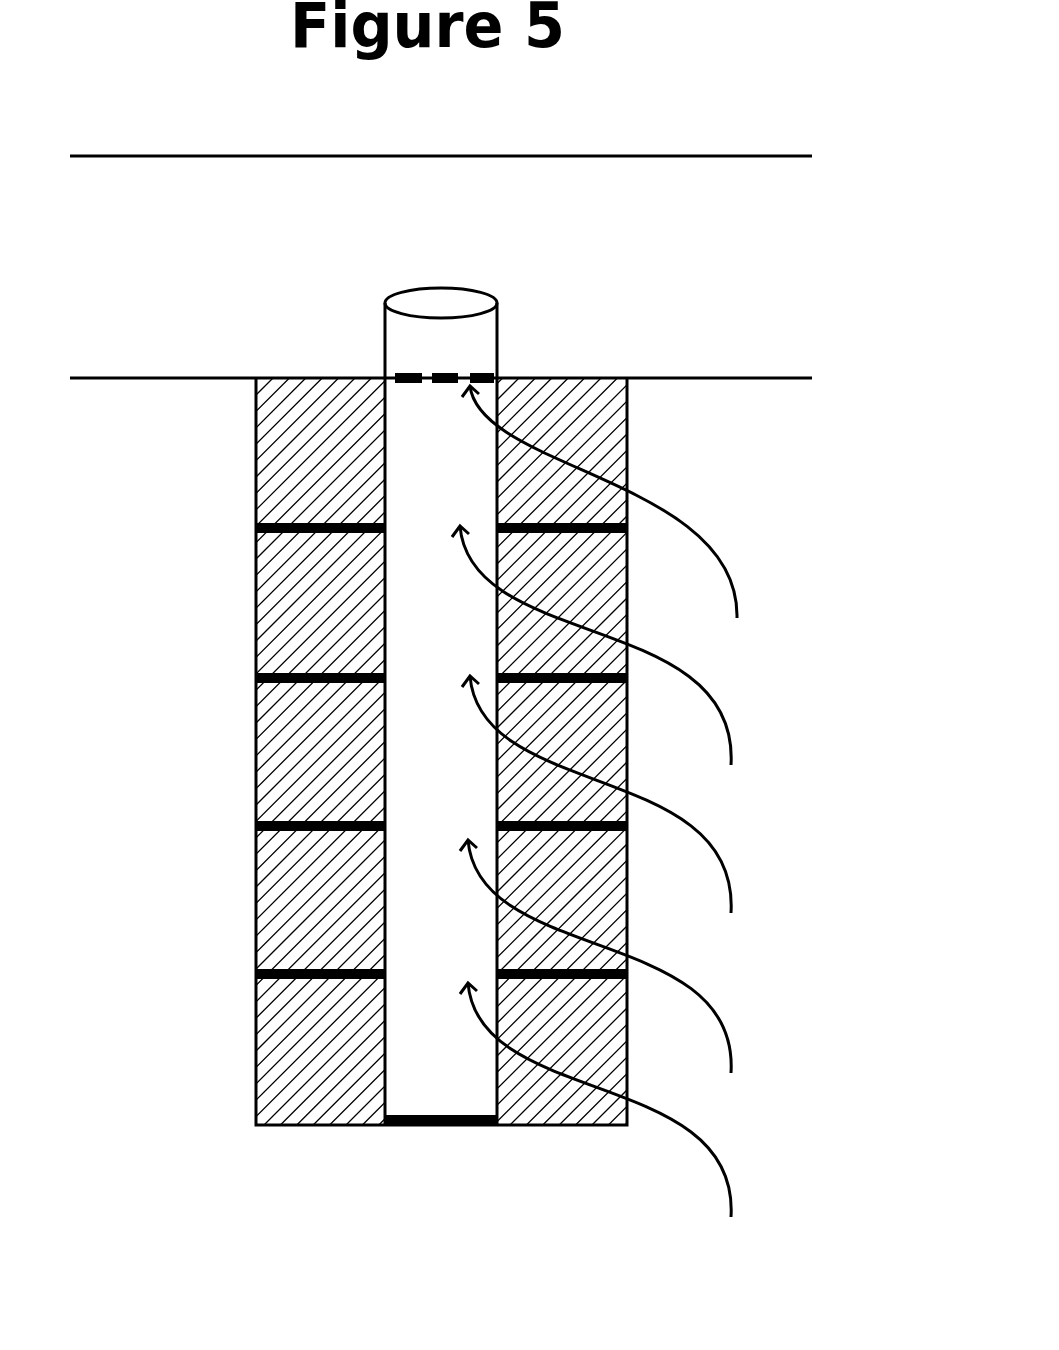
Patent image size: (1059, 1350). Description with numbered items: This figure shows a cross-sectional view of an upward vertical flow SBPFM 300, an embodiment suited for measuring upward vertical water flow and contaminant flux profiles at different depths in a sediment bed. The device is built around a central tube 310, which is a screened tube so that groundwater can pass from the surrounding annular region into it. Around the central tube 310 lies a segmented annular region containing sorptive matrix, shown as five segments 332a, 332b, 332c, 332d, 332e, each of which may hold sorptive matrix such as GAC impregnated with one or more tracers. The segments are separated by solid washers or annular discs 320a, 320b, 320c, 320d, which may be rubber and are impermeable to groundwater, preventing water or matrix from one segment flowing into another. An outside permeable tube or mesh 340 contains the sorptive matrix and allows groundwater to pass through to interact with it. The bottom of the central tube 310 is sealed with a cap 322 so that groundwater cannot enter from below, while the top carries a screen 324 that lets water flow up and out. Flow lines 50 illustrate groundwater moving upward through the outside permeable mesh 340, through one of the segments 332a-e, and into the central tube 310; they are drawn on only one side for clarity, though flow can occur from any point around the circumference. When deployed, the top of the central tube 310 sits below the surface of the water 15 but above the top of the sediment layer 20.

The surface of the water 15 is at (688, 156).
The top of the sediment layer 20 is at (688, 378).
The flow lines 50 is at (707, 547).
The upward vertical flow SBPFM 300 is at (517, 187).
The central tube 310 is at (470, 290).
The solid washer 320a is at (256, 528).
The solid washer 320b is at (256, 678).
The solid washer 320c is at (256, 826).
The solid washer 320d is at (256, 974).
The cap 322 is at (447, 1125).
The screen 324 is at (478, 376).
The segment 332a is at (300, 455).
The segment 332b is at (300, 603).
The segment 332c is at (300, 752).
The segment 332d is at (300, 900).
The segment 332e is at (300, 1065).
The outside permeable tube 340 is at (297, 1125).